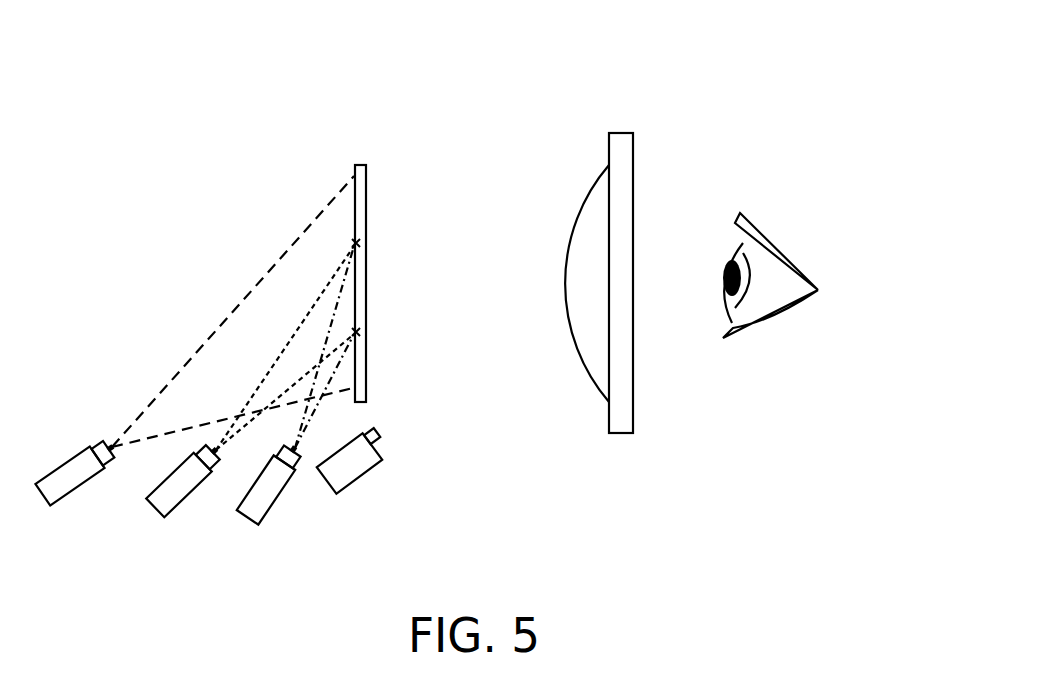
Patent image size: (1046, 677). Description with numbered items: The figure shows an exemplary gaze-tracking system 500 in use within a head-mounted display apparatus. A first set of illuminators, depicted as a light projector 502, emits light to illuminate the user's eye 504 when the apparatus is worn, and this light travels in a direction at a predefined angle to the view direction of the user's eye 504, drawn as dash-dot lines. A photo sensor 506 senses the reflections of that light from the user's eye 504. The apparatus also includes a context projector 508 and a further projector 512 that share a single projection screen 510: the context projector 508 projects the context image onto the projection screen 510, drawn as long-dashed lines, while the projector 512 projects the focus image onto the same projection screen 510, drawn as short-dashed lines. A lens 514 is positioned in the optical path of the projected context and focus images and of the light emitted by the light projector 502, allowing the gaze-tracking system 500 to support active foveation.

The gaze-tracking system 500 is at (779, 73).
The light projector 502 is at (280, 507).
The user's eye 504 is at (780, 253).
The photo sensor 506 is at (358, 478).
The context projector 508 is at (73, 492).
The projection screen 510 is at (362, 165).
The projector 512 is at (188, 503).
The lens 514 is at (633, 176).